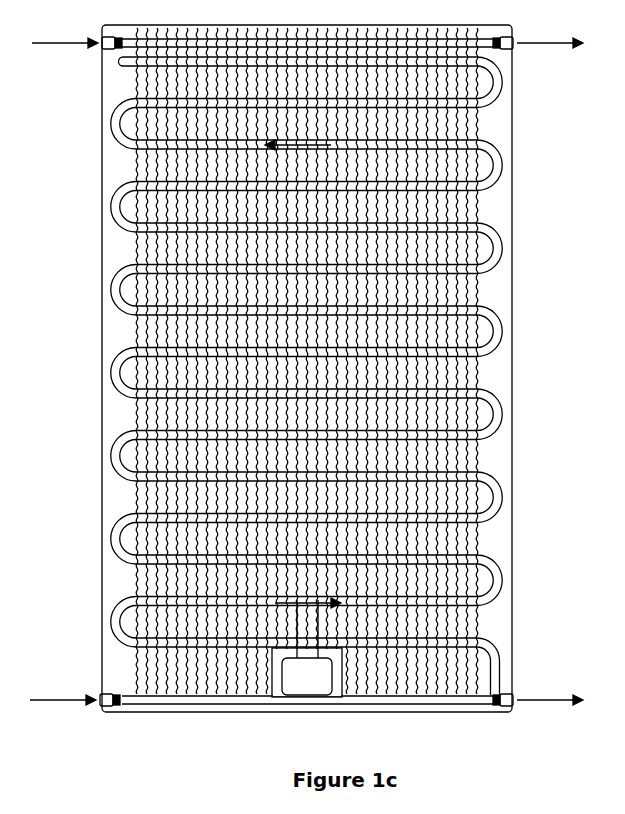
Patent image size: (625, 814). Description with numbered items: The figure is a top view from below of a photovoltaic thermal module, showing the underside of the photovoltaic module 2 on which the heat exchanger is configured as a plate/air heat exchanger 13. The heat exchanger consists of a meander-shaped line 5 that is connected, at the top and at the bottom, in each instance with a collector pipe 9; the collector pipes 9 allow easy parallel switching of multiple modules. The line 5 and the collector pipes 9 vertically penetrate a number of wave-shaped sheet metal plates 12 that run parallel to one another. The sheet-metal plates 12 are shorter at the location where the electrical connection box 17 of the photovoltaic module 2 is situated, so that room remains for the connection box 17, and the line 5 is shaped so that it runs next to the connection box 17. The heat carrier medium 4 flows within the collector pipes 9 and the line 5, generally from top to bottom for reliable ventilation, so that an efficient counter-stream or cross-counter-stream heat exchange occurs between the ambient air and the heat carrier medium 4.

The photovoltaic module 2 is at (118, 253).
The heat carrier medium 4 is at (63, 45).
The meander-shaped line 5 is at (118, 440).
The collector pipe 9 is at (132, 42).
The wave-shaped sheet metal plate 12 is at (477, 423).
The plate/air heat exchanger 13 is at (447, 292).
The electrical connection box 17 is at (313, 677).